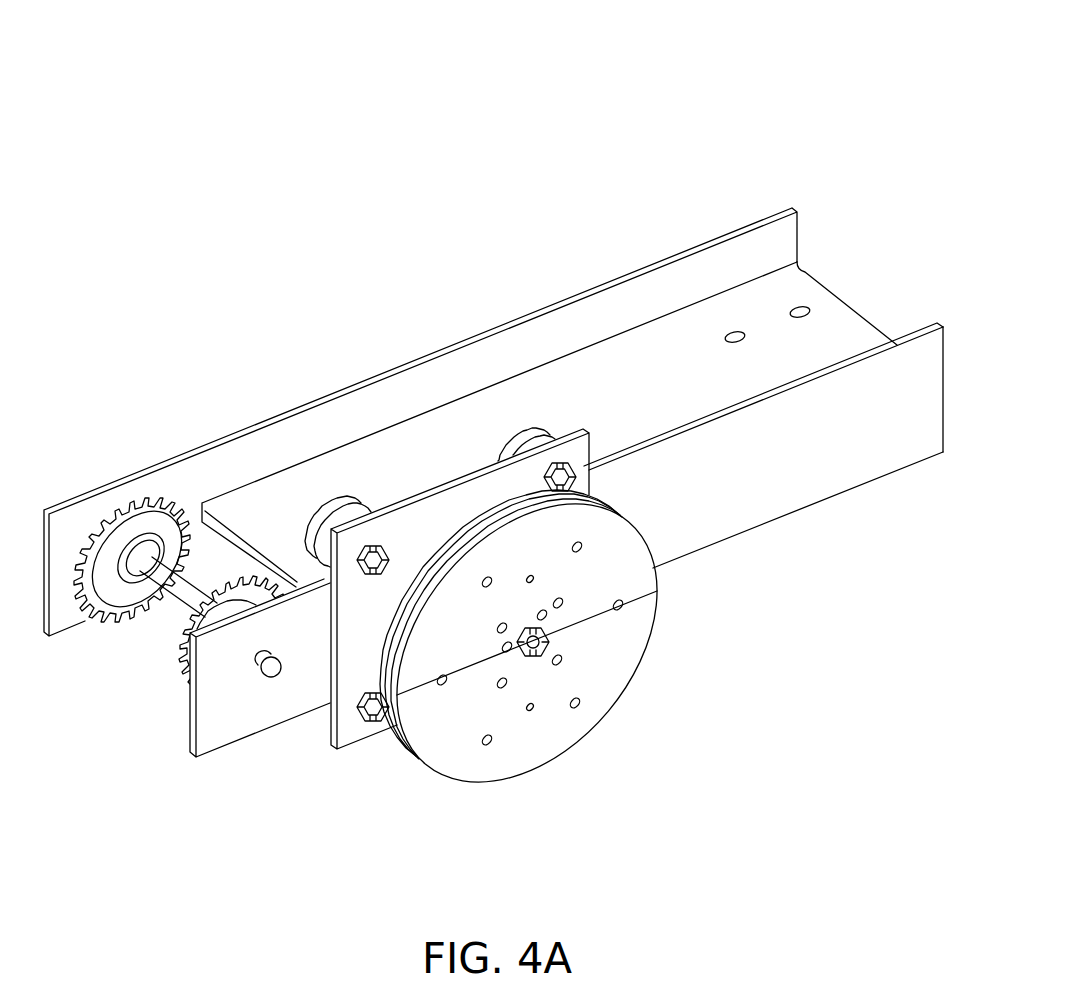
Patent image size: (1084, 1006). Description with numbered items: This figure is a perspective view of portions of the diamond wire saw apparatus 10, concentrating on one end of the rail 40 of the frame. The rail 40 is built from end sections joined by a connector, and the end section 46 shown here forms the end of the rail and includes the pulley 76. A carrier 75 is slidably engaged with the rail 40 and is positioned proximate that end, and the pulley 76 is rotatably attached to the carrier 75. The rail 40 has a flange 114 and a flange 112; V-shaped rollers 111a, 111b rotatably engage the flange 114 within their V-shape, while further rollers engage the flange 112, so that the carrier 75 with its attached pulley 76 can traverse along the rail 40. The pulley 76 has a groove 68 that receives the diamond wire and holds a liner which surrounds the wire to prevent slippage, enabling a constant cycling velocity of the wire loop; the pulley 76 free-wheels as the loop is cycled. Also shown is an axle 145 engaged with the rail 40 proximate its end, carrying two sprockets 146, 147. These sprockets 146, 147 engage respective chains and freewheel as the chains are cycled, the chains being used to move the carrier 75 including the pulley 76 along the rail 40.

The apparatus 10 is at (766, 95).
The rail 40 is at (743, 522).
The end section 46 is at (832, 483).
The groove 68 is at (485, 530).
The carrier 75 is at (358, 640).
The pulley 76 is at (548, 740).
The roller 111a is at (533, 430).
The roller 111b is at (348, 505).
The flange 112 is at (925, 455).
The flange 114 is at (915, 372).
The axle 145 is at (187, 598).
The sprocket 146 is at (125, 503).
The sprocket 147 is at (240, 582).